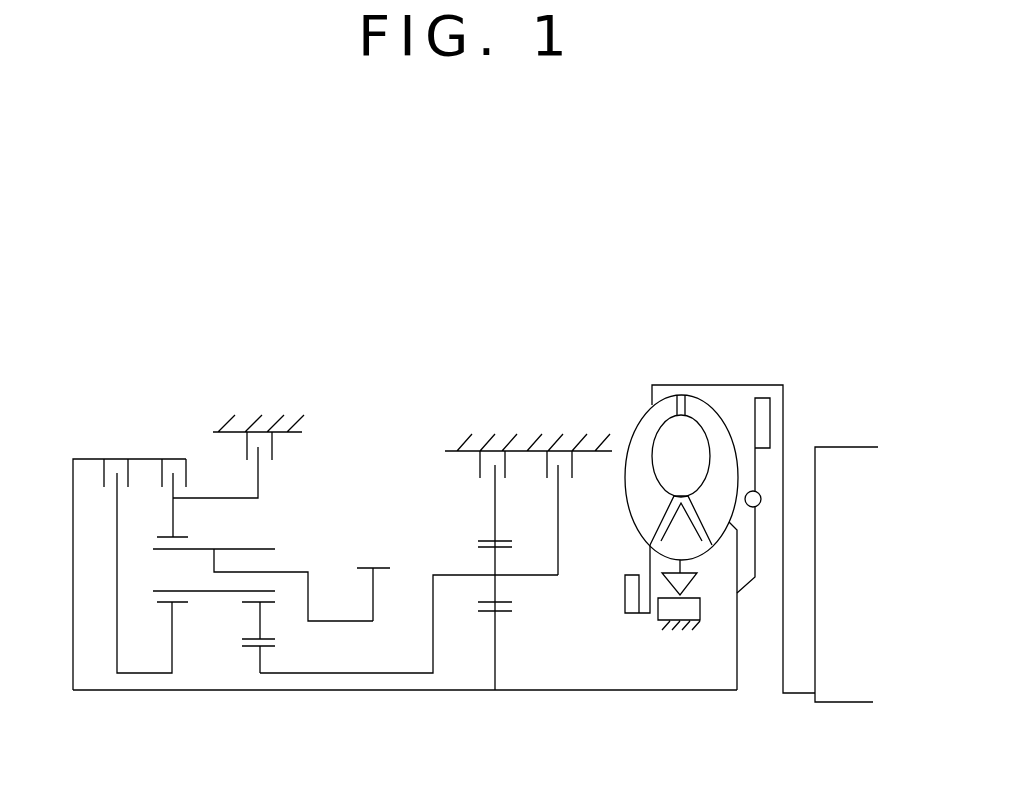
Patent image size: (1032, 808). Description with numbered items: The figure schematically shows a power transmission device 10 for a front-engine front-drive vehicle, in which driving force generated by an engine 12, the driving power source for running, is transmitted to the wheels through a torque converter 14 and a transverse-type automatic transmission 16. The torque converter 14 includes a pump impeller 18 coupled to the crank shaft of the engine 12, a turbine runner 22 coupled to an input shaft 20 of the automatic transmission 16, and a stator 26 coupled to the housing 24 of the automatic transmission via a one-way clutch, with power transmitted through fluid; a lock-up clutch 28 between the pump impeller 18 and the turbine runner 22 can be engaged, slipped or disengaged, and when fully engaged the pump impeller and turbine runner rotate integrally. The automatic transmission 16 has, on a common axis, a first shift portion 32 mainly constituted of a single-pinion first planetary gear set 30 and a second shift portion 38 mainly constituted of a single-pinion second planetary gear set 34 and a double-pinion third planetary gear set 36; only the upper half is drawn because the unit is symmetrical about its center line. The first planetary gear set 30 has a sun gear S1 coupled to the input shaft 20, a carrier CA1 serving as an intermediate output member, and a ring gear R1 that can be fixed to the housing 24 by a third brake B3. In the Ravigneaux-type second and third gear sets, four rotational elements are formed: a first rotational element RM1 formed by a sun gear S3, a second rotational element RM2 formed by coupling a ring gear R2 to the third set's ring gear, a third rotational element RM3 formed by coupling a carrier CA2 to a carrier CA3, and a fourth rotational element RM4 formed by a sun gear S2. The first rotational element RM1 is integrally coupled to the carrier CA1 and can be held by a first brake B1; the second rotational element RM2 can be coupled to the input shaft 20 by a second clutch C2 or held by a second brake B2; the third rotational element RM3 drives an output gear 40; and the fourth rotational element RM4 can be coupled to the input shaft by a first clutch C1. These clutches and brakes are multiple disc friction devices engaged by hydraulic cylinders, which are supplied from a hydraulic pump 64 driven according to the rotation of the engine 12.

The power transmission device 10 is at (178, 317).
The engine 12 is at (850, 690).
The torque converter 14 is at (767, 337).
The automatic transmission 16 is at (590, 358).
The pump impeller 18 is at (648, 428).
The input shaft 20 is at (587, 690).
The turbine runner 22 is at (710, 420).
The housing 24 is at (257, 430).
The stator 26 is at (677, 522).
The lock-up clutch 28 is at (762, 413).
The first planetary gear set 30 is at (488, 705).
The first shift portion 32 is at (417, 455).
The second planetary gear set 34 is at (173, 690).
The third planetary gear set 36 is at (262, 690).
The second shift portion 38 is at (328, 415).
The output gear 40 is at (383, 566).
The hydraulic pump 64 is at (626, 605).
The first clutch C1 is at (134, 549).
The second clutch C2 is at (169, 481).
The first brake B1 is at (579, 469).
The second brake B2 is at (279, 451).
The third brake B3 is at (471, 469).
The ring gear R1 is at (497, 537).
The ring gear R2 is at (177, 536).
The sun gear S1 is at (503, 615).
The sun gear S2 is at (177, 604).
The sun gear S3 is at (265, 648).
The carrier CA1 is at (560, 563).
The carrier CA2 is at (300, 572).
The carrier CA3 is at (366, 475).
The first rotational element RM1 is at (325, 690).
The second rotational element RM2 is at (213, 497).
The third rotational element RM3 is at (340, 621).
The fourth rotational element RM4 is at (173, 642).